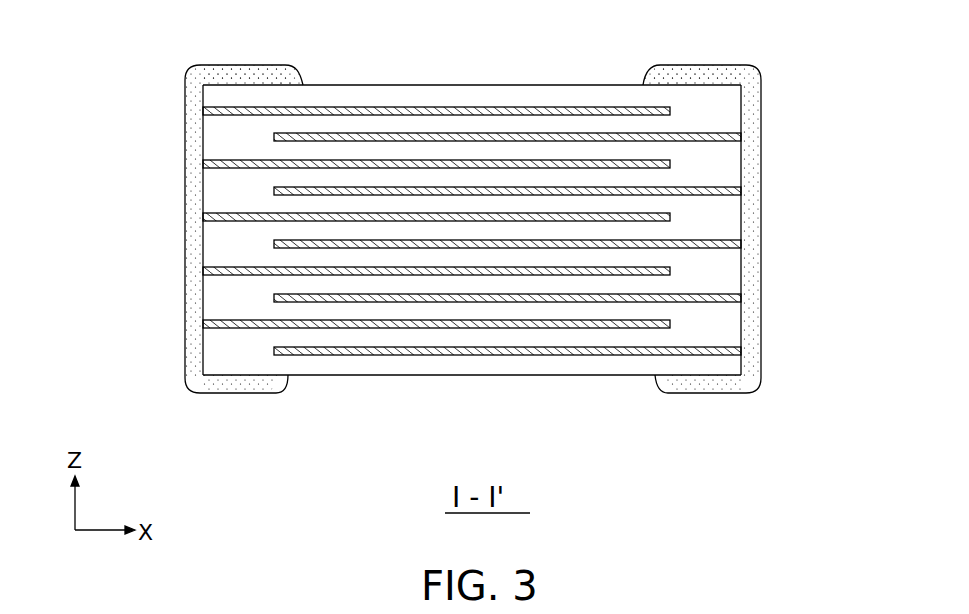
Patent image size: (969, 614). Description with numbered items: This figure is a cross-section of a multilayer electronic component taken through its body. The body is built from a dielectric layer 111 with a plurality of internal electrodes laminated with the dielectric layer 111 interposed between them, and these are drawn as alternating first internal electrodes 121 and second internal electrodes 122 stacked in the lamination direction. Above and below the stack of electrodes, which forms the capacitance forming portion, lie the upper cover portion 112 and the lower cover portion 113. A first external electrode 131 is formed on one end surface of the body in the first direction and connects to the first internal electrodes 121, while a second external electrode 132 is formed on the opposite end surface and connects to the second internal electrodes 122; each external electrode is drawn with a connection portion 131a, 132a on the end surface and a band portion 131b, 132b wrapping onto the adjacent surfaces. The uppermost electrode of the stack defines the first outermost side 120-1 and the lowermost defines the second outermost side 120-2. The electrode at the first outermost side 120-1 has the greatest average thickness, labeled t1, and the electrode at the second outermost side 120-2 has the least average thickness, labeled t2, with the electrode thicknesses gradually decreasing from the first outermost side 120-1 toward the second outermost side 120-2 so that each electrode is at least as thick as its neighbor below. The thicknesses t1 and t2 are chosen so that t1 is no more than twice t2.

The dielectric layer 111 is at (718, 160).
The upper cover portion 112 is at (473, 93).
The lower cover portion 113 is at (503, 366).
The first outermost side 120-1 is at (657, 102).
The second outermost side 120-2 is at (593, 358).
The first internal electrode 121 is at (355, 107).
The second internal electrode 122 is at (587, 133).
The first external electrode 131 is at (90, 266).
The first connection portion 131a is at (194, 266).
The first band portion 131b is at (233, 384).
The second external electrode 132 is at (855, 266).
The second connection portion 132a is at (757, 268).
The second band portion 132b is at (713, 384).
The thickness of internal electrode on first outermost side t1 is at (203, 114).
The thickness of internal electrode on second outermost side t2 is at (741, 347).